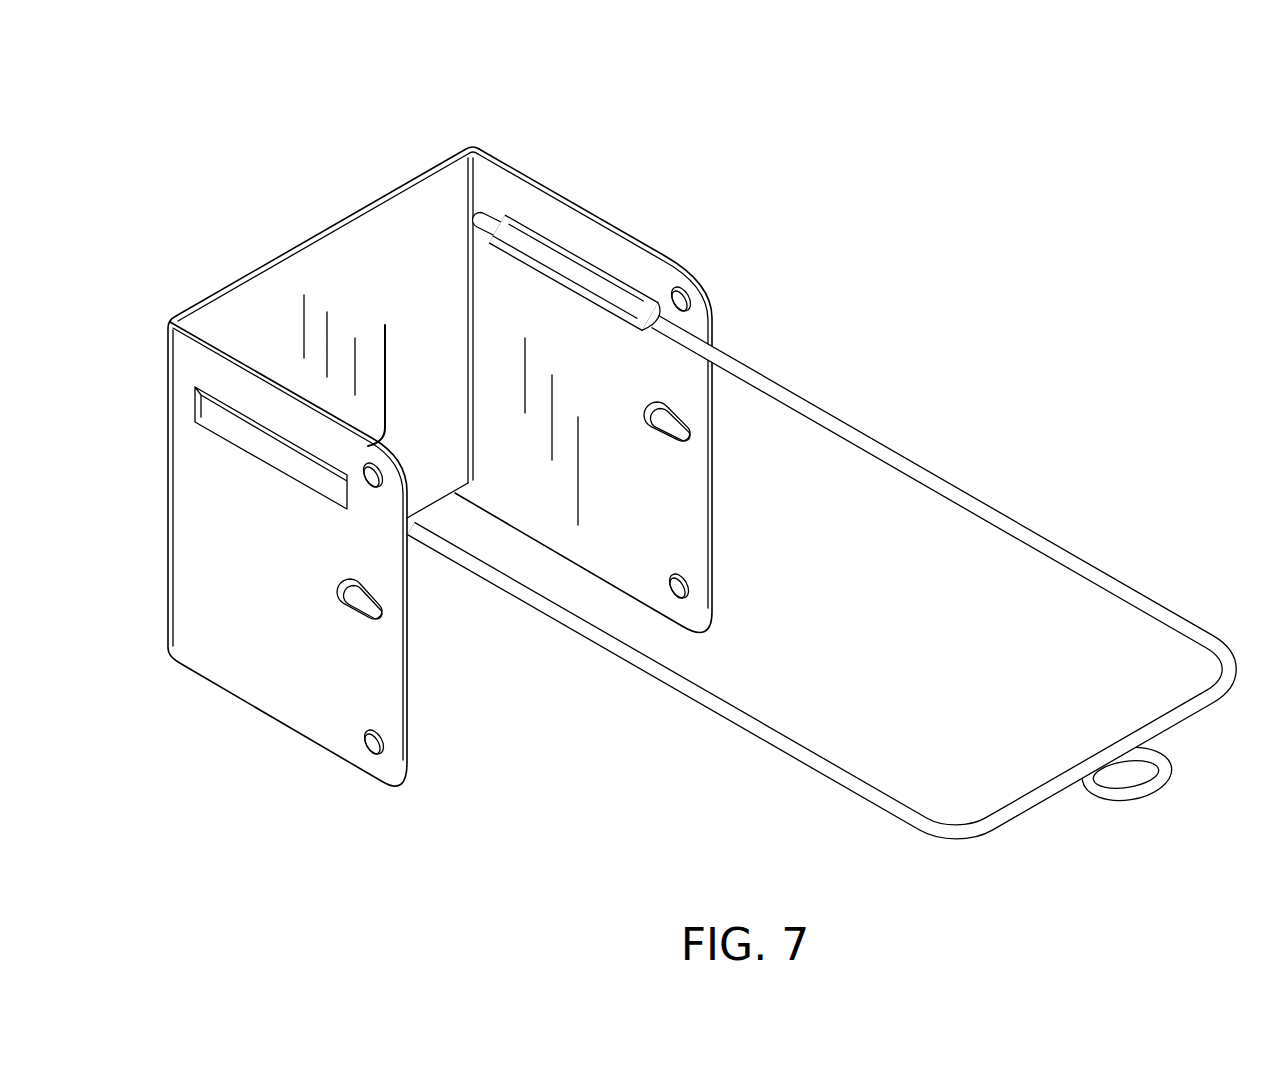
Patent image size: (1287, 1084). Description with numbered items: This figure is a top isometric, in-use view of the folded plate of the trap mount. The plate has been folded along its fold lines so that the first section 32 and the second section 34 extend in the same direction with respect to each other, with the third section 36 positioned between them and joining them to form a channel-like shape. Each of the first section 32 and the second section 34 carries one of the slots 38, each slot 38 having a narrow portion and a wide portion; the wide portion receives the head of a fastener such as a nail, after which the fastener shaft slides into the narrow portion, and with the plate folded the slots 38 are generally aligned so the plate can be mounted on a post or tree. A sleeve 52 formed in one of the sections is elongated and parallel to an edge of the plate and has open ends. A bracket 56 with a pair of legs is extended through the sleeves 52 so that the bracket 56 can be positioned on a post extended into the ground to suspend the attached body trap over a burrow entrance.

The first section 32 is at (668, 505).
The second section 34 is at (263, 663).
The third section 36 is at (353, 253).
The slots 38 is at (690, 437).
The sleeves 52 is at (572, 262).
The bracket 56 is at (1072, 555).